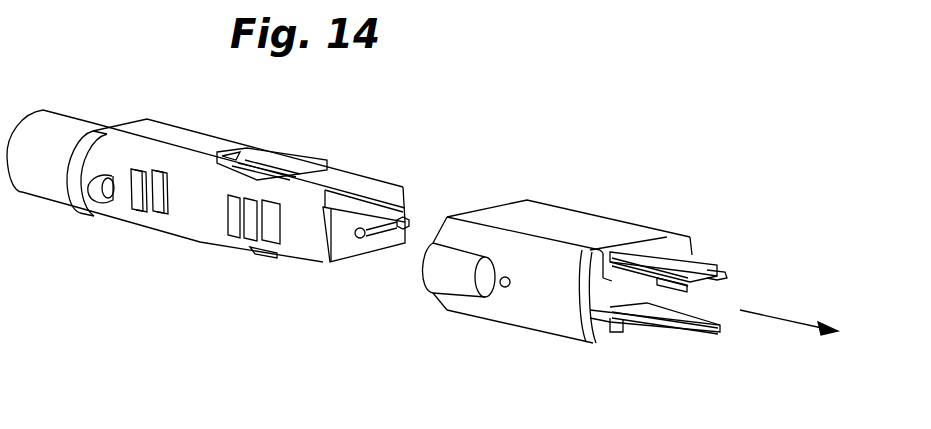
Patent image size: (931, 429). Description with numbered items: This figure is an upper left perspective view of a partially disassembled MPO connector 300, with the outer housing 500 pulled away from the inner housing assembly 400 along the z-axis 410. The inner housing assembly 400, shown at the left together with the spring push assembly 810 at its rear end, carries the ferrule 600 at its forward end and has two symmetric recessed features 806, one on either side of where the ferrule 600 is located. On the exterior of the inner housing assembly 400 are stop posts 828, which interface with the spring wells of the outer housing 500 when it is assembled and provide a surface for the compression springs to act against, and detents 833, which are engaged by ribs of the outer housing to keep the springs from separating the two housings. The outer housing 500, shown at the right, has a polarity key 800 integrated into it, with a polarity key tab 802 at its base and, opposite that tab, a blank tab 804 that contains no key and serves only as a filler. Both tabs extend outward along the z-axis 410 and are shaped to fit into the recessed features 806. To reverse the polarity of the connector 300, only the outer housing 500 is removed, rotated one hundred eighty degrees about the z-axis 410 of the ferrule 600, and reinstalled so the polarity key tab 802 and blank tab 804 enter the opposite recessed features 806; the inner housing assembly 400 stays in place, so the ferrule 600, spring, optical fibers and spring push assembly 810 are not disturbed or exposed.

The MPO connector 300 is at (572, 100).
The inner housing assembly 400 is at (177, 137).
The z-axis 410 is at (805, 343).
The outer housing 500 is at (605, 218).
The ferrule 600 is at (415, 222).
The polarity key 800 is at (690, 257).
The polarity key tab 802 is at (707, 273).
The blank tab 804 is at (688, 318).
The recessed features 806 is at (357, 197).
The spring push assembly 810 is at (48, 128).
The stop posts 828 is at (110, 192).
The detents 833 is at (147, 203).